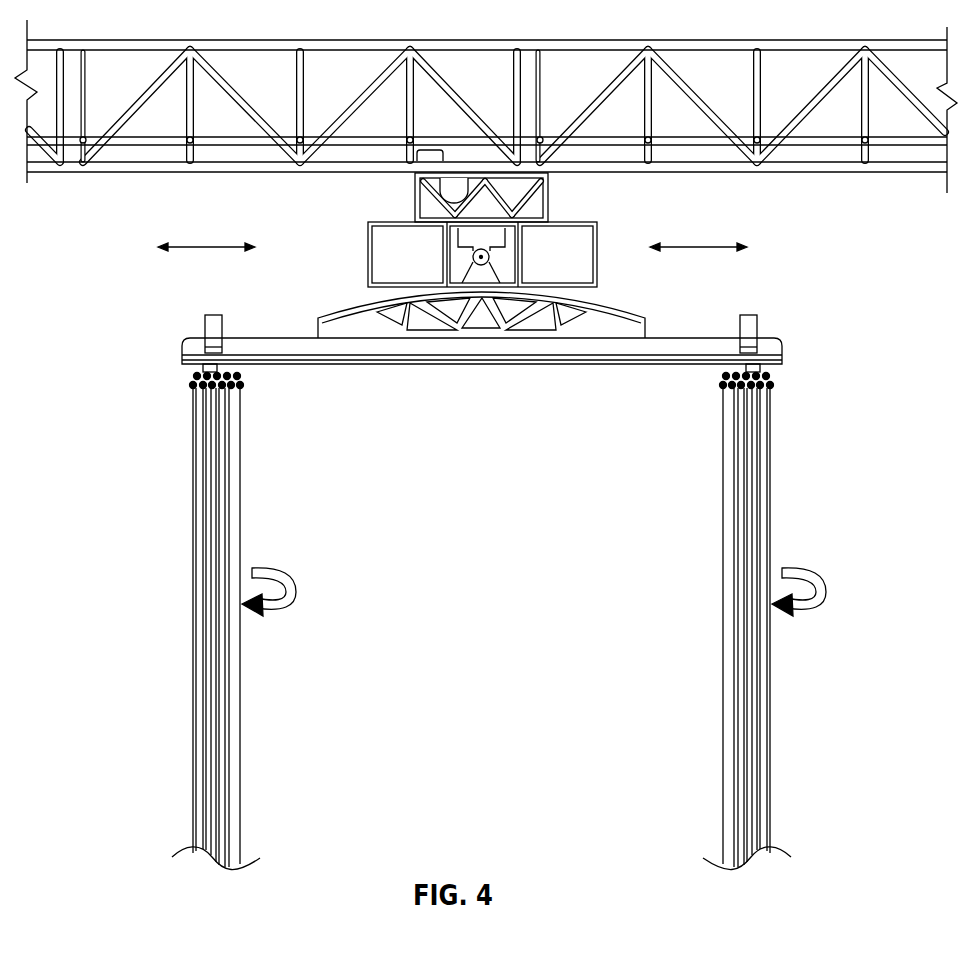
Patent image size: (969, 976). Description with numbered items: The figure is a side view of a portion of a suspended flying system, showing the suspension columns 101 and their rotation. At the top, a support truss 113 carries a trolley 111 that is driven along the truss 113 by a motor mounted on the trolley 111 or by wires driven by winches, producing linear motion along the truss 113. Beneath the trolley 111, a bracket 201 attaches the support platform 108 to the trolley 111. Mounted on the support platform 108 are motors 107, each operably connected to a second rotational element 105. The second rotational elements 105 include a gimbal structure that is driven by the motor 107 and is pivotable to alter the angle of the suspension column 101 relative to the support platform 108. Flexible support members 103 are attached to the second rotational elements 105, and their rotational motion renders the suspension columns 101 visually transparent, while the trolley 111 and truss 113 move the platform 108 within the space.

The suspension column 101 is at (140, 568).
The flexible support members 103 is at (193, 715).
The second rotational element 105 is at (192, 381).
The motor 107 is at (205, 322).
The support platform 108 is at (540, 350).
The trolley 111 is at (548, 198).
The support truss 113 is at (172, 173).
The bracket 201 is at (345, 305).